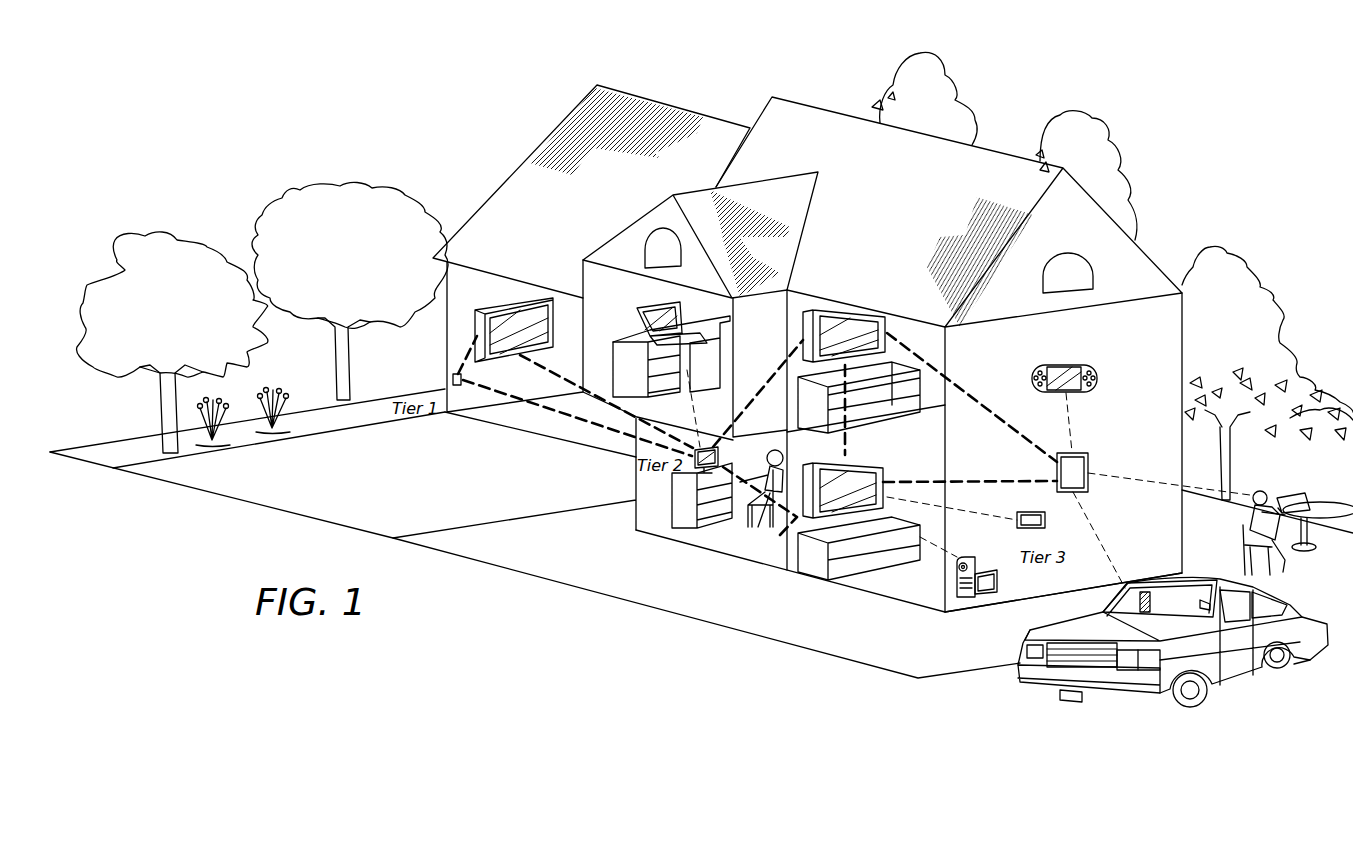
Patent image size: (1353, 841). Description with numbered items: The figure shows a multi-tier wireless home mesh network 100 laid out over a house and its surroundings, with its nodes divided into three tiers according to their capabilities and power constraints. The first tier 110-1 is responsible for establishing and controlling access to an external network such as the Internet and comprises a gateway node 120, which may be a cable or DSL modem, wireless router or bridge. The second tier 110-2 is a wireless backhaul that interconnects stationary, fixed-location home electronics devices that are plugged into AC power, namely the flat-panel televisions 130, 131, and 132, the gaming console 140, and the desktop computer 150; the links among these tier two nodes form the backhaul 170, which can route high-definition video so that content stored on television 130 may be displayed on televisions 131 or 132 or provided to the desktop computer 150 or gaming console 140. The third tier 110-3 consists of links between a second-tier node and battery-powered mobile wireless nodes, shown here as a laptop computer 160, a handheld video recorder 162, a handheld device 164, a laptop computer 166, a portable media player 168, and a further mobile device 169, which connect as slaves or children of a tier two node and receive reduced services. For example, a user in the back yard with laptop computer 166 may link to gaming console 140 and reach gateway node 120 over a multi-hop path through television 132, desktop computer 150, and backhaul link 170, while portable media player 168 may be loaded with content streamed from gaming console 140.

The multi-tier wireless home mesh network 100 is at (1202, 136).
The first tier 110-1 is at (390, 408).
The second tier 110-2 is at (653, 473).
The third tier 110-3 is at (1038, 568).
The gateway node 120 is at (452, 379).
The flat-panel television 130 is at (502, 298).
The flat-panel television 131 is at (816, 308).
The flat-panel television 132 is at (800, 521).
The gaming console 140 is at (1078, 453).
The desktop computer 150 is at (707, 448).
The mobile wireless node 160 is at (650, 334).
The handheld video recorder 162 is at (977, 597).
The mobile wireless node 164 is at (1073, 365).
The laptop computer 166 is at (1298, 493).
The portable media player 168 is at (1152, 587).
The mobile wireless node 169 is at (1037, 512).
The backhaul link 170 is at (557, 412).